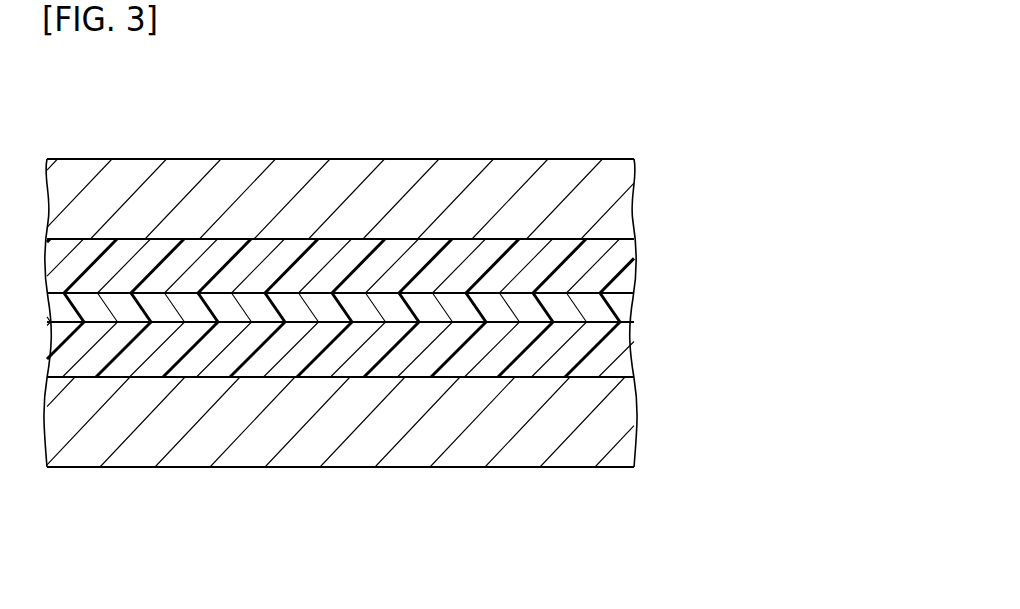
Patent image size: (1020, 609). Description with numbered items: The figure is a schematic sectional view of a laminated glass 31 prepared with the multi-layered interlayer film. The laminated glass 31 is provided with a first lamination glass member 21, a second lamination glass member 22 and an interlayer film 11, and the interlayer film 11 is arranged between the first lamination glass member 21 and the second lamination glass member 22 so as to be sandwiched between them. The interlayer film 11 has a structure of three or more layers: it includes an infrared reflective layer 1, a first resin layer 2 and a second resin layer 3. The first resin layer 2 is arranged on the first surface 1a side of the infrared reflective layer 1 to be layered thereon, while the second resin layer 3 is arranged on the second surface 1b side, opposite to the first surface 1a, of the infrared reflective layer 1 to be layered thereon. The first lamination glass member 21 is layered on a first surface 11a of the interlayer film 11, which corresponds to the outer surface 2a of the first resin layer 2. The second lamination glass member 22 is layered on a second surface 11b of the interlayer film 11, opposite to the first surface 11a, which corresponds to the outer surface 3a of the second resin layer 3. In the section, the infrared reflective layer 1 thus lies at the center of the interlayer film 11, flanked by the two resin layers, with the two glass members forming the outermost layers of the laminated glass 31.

The laminated glass 31 is at (175, 124).
The interlayer film 11 is at (263, 237).
The first surface of the interlayer film 11a is at (352, 377).
The second surface of the interlayer film 11b is at (352, 238).
The infrared reflective layer 1 is at (638, 308).
The first surface of the infrared reflective layer 1a is at (438, 322).
The second surface of the infrared reflective layer 1b is at (438, 293).
The first resin layer 2 is at (638, 350).
The outer surface of the first resin layer 2a is at (552, 377).
The second resin layer 3 is at (638, 268).
The outer surface of the second resin layer 3a is at (558, 238).
The first lamination glass member 21 is at (633, 408).
The second lamination glass member 22 is at (636, 190).